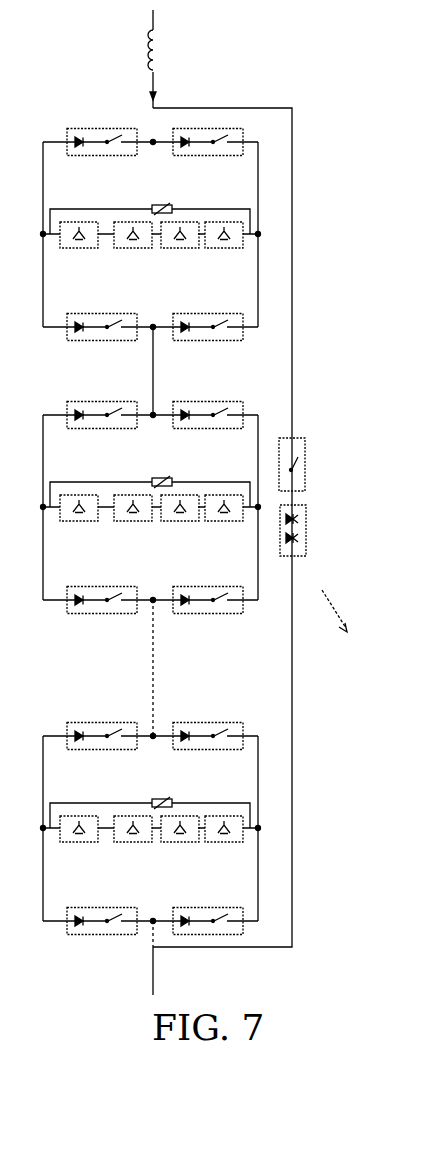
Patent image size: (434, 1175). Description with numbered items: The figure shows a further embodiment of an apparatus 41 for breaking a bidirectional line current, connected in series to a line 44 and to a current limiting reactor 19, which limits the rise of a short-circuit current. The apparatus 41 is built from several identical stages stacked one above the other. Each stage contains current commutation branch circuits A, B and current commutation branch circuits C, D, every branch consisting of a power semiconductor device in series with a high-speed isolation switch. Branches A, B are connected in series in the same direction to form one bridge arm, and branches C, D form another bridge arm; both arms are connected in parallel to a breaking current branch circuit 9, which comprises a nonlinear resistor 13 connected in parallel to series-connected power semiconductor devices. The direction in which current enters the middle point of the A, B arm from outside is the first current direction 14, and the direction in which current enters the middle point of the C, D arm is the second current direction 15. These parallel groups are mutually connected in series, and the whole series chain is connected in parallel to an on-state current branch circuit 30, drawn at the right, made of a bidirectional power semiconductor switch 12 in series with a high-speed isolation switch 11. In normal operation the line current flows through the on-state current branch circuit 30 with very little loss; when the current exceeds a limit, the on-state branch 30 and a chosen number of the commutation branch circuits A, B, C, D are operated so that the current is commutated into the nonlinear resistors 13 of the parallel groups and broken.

The line 44 is at (154, 18).
The current limiting reactor 19 is at (156, 34).
The first current direction 14 is at (154, 84).
The second current direction 15 is at (154, 978).
The breaking current branch circuit 9 is at (151, 547).
The nonlinear resistor 13 is at (160, 207).
The high-speed isolation switch 11 is at (284, 438).
The bidirectional power semiconductor switch 12 is at (284, 556).
The on-state current branch circuit 30 is at (310, 420).
The apparatus 41 is at (338, 620).
The current commutation branch circuit A is at (210, 129).
The current commutation branch circuit B is at (104, 129).
The current commutation branch circuit C is at (210, 314).
The current commutation branch circuit D is at (104, 314).